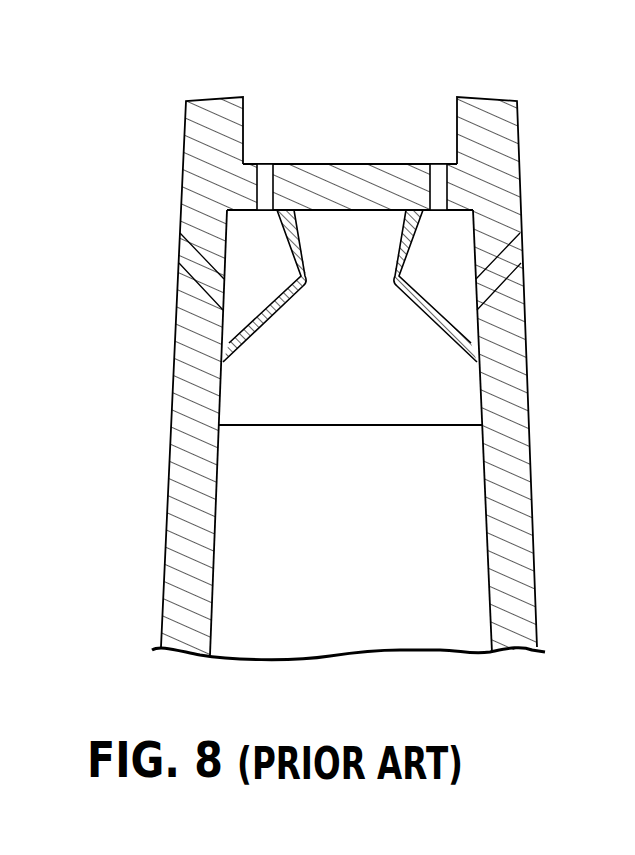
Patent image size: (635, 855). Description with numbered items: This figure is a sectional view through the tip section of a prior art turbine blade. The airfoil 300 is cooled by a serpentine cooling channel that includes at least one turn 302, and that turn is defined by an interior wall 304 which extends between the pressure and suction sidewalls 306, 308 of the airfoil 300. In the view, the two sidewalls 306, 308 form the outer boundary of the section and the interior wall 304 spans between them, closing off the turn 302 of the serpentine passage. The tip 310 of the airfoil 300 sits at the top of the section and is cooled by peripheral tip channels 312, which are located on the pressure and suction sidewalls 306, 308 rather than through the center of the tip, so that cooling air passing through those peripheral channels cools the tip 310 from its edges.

The airfoil 300 is at (128, 125).
The turn 302 is at (369, 373).
The interior wall 304 is at (432, 620).
The pressure sidewall 306 is at (535, 498).
The suction sidewall 308 is at (168, 502).
The tip 310 is at (350, 343).
The peripheral tip channels 312 is at (282, 277).